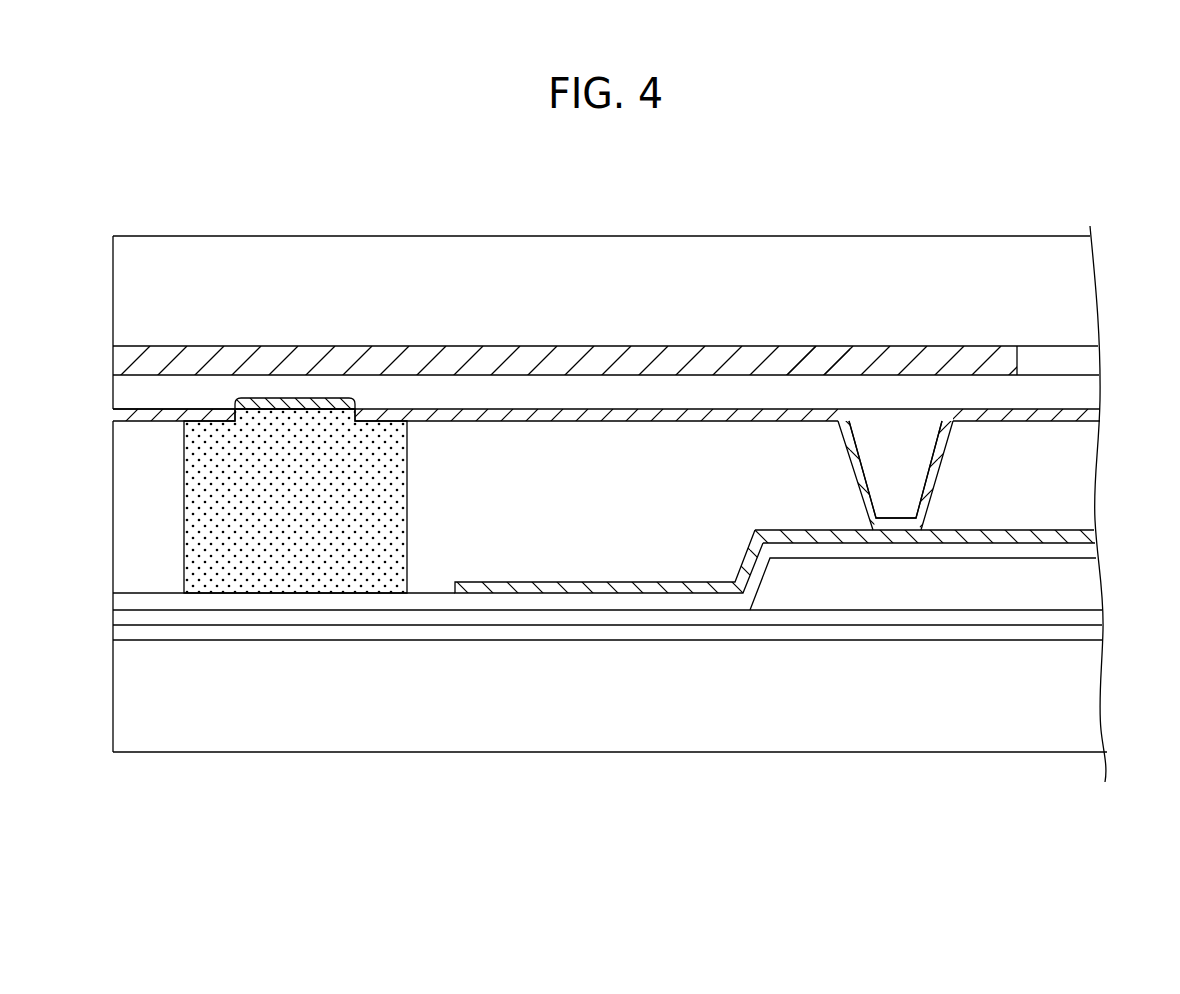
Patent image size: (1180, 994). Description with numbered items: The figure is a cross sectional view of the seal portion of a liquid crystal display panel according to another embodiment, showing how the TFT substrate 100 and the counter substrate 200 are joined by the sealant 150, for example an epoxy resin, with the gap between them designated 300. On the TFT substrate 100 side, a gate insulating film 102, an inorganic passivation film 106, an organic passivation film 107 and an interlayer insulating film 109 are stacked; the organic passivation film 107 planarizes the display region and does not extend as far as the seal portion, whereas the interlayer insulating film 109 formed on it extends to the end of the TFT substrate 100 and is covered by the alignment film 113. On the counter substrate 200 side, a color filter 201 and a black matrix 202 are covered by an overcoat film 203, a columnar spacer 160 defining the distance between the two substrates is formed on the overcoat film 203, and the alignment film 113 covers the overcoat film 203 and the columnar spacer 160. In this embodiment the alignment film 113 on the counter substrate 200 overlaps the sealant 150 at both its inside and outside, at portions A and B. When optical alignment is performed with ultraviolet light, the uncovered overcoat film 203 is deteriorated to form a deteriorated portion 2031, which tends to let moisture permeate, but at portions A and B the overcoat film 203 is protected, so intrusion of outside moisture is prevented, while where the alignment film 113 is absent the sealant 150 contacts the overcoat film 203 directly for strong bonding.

The TFT substrate 100 is at (1073, 692).
The gate insulating film 102 is at (1073, 637).
The inorganic passivation film 106 is at (1073, 615).
The organic passivation film 107 is at (1073, 585).
The interlayer insulating film 109 is at (1073, 553).
The alignment film 113 is at (165, 417).
The sealant 150 is at (205, 502).
The columnar spacer 160 is at (900, 457).
The counter substrate 200 is at (1073, 292).
The color filter 201 is at (1073, 362).
The black matrix 202 is at (811, 362).
The overcoat film 203 is at (1073, 390).
The deteriorated portion of the overcoat film 2031 is at (292, 403).
The gap / liquid crystal layer 300 is at (1073, 472).
The portion A is at (213, 402).
The portion B is at (380, 398).